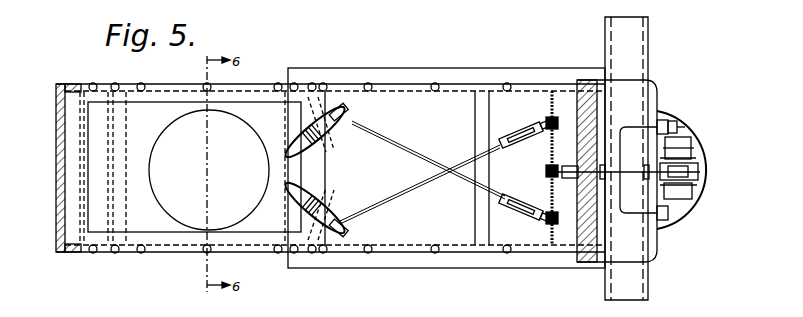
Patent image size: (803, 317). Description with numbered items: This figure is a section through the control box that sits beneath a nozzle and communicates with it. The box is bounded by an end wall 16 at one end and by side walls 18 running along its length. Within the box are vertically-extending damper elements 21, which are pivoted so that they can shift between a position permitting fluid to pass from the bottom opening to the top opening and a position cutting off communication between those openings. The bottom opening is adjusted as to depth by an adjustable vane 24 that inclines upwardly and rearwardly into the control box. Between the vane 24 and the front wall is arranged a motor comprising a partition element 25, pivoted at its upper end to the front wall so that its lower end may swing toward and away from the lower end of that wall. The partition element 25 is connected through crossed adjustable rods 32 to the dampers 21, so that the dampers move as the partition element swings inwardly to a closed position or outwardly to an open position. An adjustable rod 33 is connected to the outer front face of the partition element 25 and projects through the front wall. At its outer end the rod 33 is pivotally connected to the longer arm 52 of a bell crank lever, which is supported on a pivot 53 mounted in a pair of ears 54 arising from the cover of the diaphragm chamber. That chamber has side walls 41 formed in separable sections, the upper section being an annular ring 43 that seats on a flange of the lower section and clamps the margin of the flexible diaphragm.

The end wall 16 is at (56, 158).
The side walls 18 is at (453, 84).
The damper elements 21 is at (312, 143).
The adjustable vane 24 is at (475, 218).
The partition element 25 is at (547, 155).
The crossed adjustable rods 32 is at (434, 180).
The adjustable rod 33 is at (634, 163).
The side walls 41 is at (691, 145).
The annular ring 43 is at (680, 122).
The longer arm 52 is at (702, 172).
The pivot 53 is at (692, 209).
The ears 54 is at (694, 150).